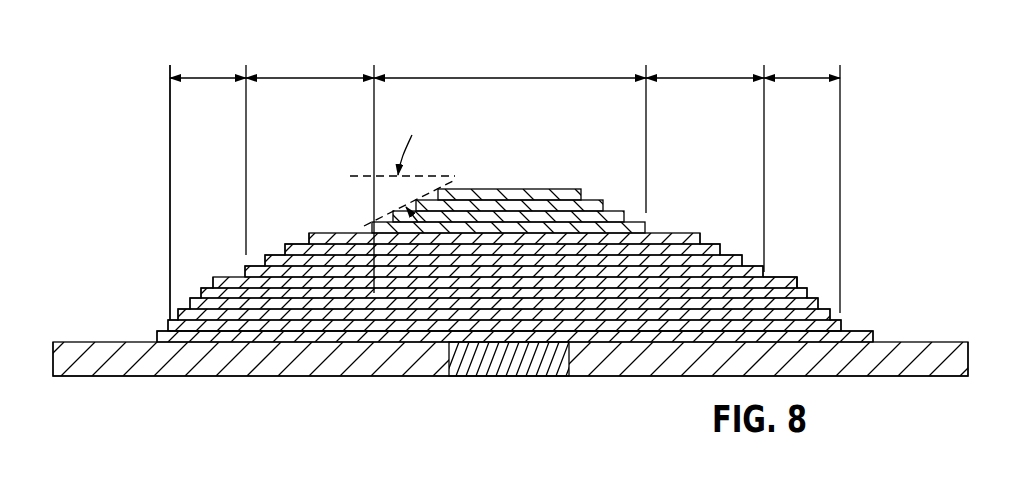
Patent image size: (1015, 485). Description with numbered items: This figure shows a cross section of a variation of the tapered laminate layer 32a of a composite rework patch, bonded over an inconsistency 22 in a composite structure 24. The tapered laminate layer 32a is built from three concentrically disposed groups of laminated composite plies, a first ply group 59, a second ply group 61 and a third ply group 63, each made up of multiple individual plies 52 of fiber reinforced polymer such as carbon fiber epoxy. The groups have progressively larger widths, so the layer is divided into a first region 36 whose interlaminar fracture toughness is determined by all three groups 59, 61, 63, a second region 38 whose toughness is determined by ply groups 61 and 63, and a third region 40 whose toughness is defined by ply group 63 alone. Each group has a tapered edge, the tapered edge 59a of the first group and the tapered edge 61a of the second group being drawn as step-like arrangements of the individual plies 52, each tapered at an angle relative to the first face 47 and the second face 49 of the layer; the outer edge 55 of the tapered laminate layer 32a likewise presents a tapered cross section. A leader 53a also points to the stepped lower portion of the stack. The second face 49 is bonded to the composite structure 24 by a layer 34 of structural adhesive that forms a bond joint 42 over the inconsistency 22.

The inconsistency 22 is at (482, 379).
The composite structure 24 is at (170, 365).
The tapered laminate layer 32a is at (152, 148).
The layer of structural adhesive 34 is at (165, 338).
The first region 36 is at (503, 74).
The second region 38 is at (307, 74).
The third region 40 is at (207, 74).
The bond joint 42 is at (893, 331).
The first face 47 is at (491, 185).
The second face 49 is at (324, 336).
The plies 52 is at (230, 305).
The lower left step region 53a is at (183, 292).
The edge 55 is at (802, 243).
The first ply group 59 is at (656, 214).
The tapered edge of first ply group 59a is at (366, 173).
The second ply group 61 is at (752, 235).
The tapered edge of second ply group 61a is at (262, 240).
The third ply group 63 is at (839, 288).